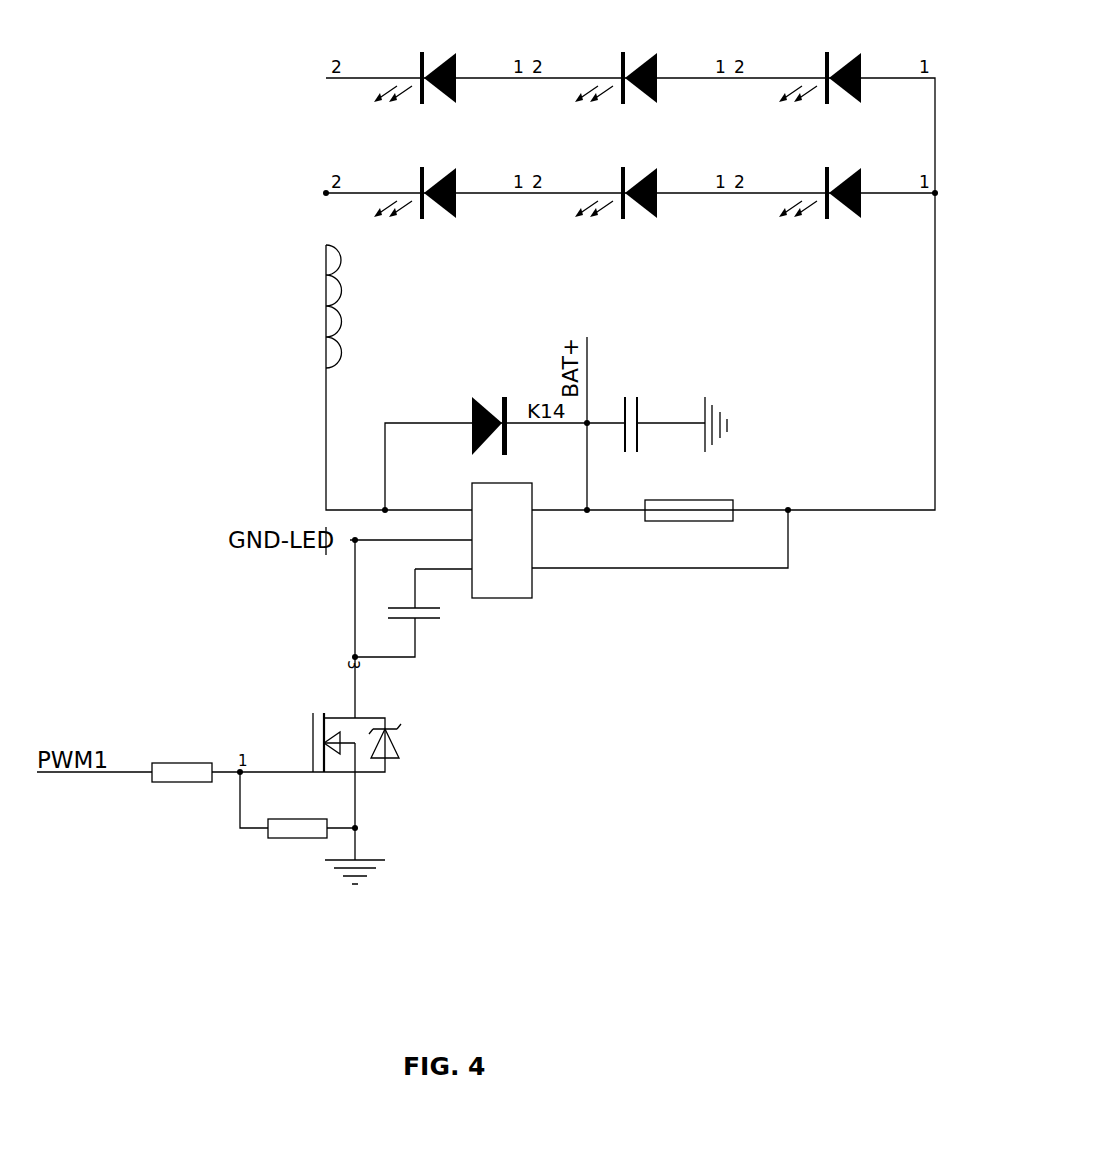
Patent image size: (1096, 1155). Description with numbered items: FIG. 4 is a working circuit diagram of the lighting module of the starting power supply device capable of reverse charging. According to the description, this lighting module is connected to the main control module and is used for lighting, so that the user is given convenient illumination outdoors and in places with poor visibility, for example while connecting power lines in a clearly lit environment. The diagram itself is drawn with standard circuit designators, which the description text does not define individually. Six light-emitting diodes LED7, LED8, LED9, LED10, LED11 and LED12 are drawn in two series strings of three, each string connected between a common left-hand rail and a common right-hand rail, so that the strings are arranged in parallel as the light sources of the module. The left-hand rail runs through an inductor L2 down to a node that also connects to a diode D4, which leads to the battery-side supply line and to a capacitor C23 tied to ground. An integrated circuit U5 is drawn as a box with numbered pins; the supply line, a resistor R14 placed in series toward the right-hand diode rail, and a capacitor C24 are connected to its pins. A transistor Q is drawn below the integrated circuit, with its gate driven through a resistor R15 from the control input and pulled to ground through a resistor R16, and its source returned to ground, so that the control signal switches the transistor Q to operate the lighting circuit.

The light emitting diode LED7 is at (414, 79).
The light emitting diode LED8 is at (615, 79).
The light emitting diode LED9 is at (819, 79).
The light emitting diode LED10 is at (414, 194).
The light emitting diode LED11 is at (615, 194).
The light emitting diode LED12 is at (819, 194).
The inductor L2 is at (359, 306).
The diode D4 is at (486, 453).
The capacitor C23 is at (662, 424).
The resistor R14 is at (660, 534).
The driver chip U5 is at (468, 557).
The capacitor C24 is at (418, 613).
The MOSFET transistor Q is at (369, 742).
The resistor R15 is at (175, 758).
The resistor R16 is at (298, 805).